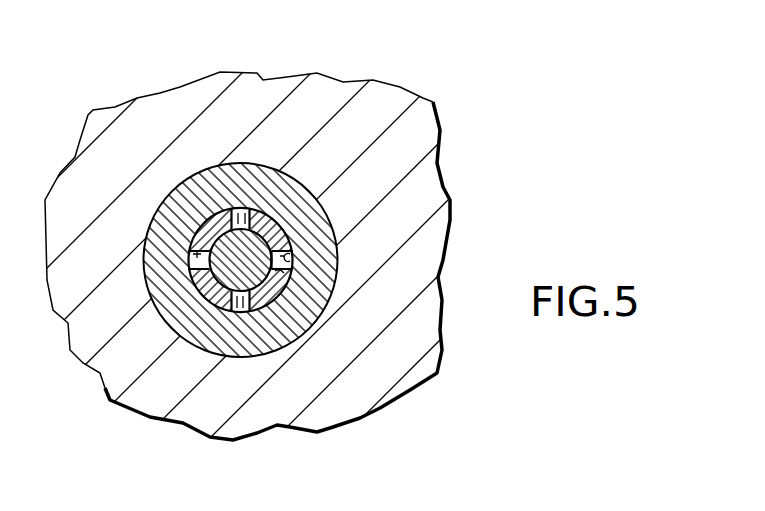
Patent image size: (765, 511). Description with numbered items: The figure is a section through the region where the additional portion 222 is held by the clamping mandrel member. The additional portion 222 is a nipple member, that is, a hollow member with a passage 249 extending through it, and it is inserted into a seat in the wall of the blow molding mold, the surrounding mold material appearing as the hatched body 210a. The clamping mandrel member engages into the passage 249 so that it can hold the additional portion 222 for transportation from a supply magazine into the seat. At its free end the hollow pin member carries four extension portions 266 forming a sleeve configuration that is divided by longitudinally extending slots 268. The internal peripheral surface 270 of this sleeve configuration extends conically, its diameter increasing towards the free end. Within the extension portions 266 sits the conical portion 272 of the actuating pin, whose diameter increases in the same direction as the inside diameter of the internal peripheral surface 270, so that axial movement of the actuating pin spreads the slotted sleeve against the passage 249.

The housing body 210a is at (408, 355).
The additional portion 222 is at (287, 207).
The extension portions 266 is at (270, 213).
The longitudinally extending slots 268 is at (241, 206).
The internal peripheral surface 270 is at (262, 272).
The conical portion 272 is at (283, 242).
The passage 249 is at (292, 287).